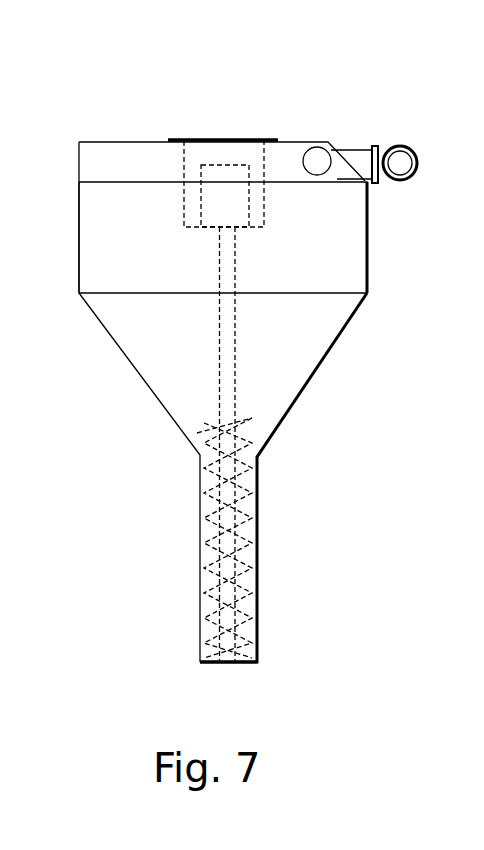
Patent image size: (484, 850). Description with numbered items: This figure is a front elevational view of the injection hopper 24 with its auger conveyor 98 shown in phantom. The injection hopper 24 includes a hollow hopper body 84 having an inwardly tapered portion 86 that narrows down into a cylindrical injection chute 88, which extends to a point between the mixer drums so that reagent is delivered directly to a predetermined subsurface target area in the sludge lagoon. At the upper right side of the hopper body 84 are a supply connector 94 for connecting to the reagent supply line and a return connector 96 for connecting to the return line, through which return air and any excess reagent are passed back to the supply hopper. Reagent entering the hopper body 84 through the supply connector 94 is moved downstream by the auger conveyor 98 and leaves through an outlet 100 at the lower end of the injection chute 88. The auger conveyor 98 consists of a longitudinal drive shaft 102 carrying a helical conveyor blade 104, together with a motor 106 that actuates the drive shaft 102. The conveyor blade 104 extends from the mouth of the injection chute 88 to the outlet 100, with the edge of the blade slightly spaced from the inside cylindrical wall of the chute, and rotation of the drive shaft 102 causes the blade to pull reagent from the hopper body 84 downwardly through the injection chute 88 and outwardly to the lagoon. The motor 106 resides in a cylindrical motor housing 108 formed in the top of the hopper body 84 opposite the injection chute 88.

The injection hopper 24 is at (68, 132).
The hollow hopper body 84 is at (79, 255).
The inwardly tapered portion 86 is at (142, 372).
The cylindrical injection chute 88 is at (207, 582).
The supply connector 94 is at (418, 163).
The return connector 96 is at (332, 166).
The auger conveyor 98 is at (245, 387).
The outlet 100 is at (215, 650).
The longitudinal drive shaft 102 is at (233, 247).
The helical conveyor blade 104 is at (225, 429).
The motor 106 is at (201, 165).
The cylindrical motor housing 108 is at (247, 138).